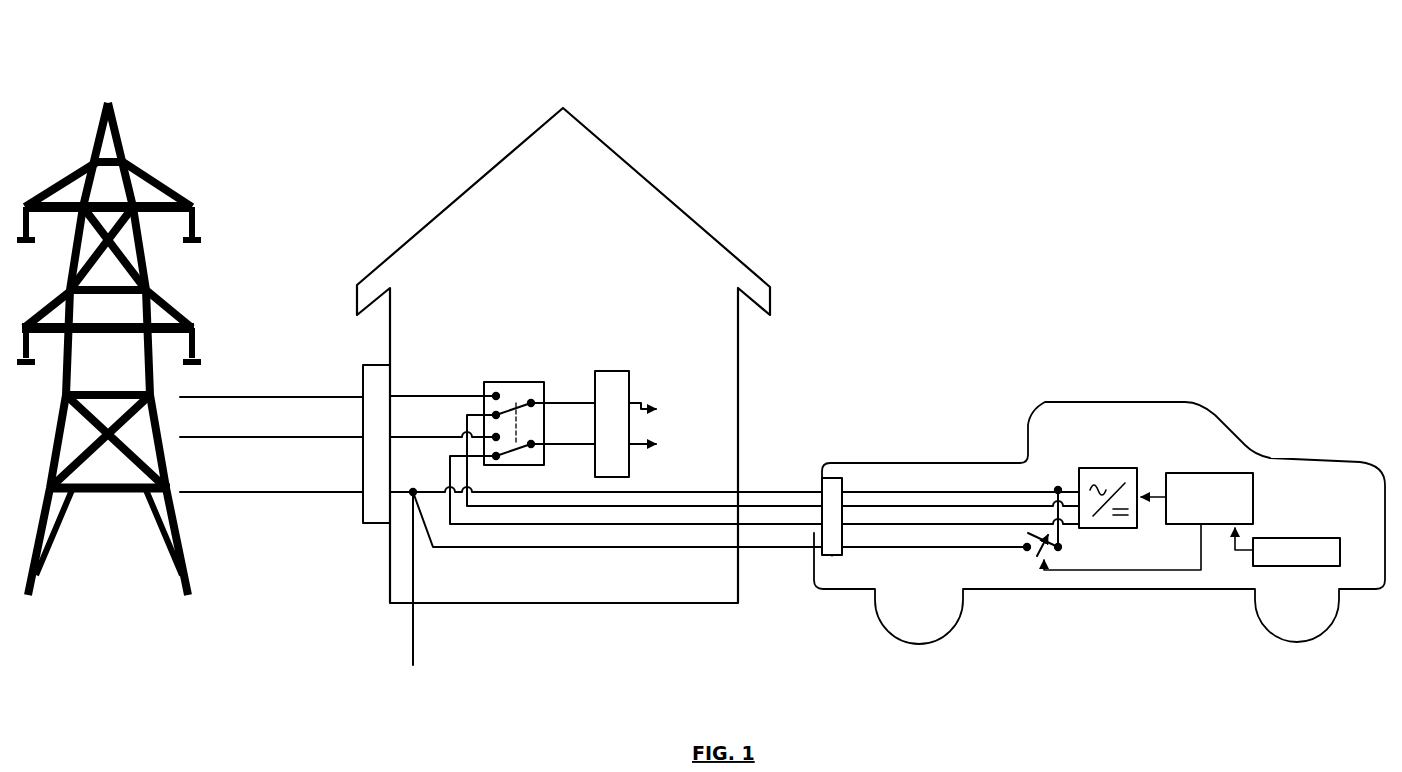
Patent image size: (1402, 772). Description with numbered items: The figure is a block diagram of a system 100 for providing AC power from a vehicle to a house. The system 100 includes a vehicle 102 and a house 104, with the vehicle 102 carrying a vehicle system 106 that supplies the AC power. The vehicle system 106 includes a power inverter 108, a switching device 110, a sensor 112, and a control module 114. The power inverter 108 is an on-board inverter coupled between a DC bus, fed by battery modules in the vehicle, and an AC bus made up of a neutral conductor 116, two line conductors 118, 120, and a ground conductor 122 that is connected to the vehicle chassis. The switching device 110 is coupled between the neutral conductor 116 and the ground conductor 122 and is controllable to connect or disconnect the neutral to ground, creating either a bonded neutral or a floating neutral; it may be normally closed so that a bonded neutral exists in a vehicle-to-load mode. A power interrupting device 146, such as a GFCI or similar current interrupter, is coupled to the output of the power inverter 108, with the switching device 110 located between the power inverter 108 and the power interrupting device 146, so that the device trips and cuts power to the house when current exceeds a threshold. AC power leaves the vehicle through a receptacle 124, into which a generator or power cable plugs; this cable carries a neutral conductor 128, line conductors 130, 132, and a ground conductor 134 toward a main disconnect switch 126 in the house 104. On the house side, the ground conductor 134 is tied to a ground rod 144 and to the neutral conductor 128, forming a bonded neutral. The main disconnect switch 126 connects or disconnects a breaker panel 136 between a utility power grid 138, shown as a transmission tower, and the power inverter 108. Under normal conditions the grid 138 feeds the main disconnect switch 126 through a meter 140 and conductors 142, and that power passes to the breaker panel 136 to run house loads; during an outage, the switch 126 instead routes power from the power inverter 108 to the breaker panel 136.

The system 100 is at (305, 45).
The vehicle 102 is at (1090, 322).
The house 104 is at (710, 147).
The vehicle system 106 is at (1168, 432).
The power inverter 108 is at (1104, 468).
The switching device 110 is at (1030, 560).
The sensor 112 is at (1279, 538).
The control module 114 is at (1253, 495).
The neutral conductor 116 is at (983, 492).
The line conductor 118 is at (923, 507).
The line conductor 120 is at (970, 524).
The ground conductor 122 is at (875, 548).
The receptacle 124 is at (843, 483).
The main disconnect switch 126 is at (502, 382).
The neutral conductor 128 is at (660, 492).
The line conductor 130 is at (707, 503).
The line conductor 132 is at (630, 525).
The ground conductor 134 is at (606, 548).
The breaker panel 136 is at (608, 371).
The utility power grid 138 is at (190, 150).
The meter 140 is at (372, 365).
The conductors 142 is at (244, 516).
The ground rod 144 is at (415, 631).
The power interrupting device 146 is at (832, 556).